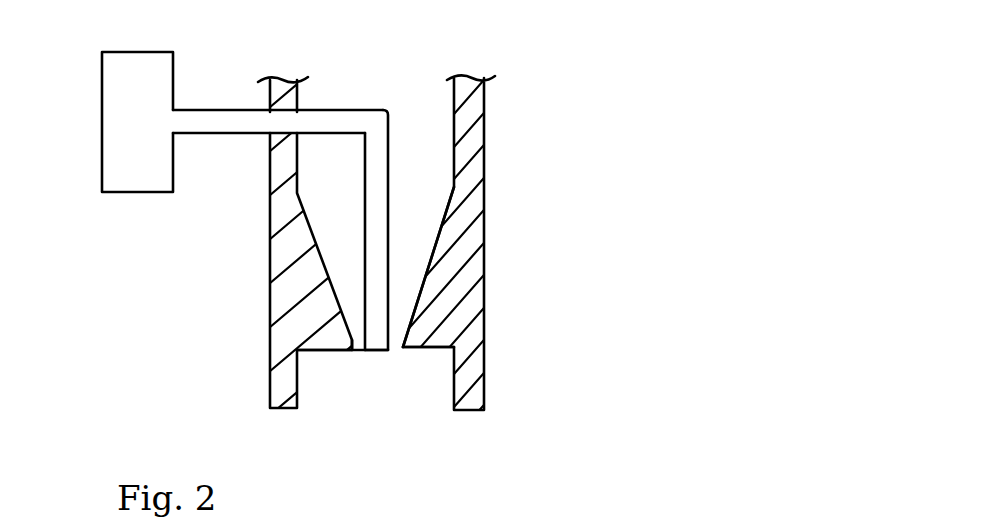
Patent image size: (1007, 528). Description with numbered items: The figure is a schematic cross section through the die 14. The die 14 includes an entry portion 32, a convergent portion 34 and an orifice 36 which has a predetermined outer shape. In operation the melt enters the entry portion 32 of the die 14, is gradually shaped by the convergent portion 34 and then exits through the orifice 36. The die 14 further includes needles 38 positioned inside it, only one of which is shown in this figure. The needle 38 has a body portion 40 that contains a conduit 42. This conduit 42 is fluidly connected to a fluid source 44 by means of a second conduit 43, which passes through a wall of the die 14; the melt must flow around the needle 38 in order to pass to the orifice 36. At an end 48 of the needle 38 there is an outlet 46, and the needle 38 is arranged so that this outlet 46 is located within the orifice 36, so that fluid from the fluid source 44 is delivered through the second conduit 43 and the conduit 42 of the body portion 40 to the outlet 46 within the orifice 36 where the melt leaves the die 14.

The die 14 is at (616, 150).
The entry portion 32 is at (298, 101).
The convergent portion 34 is at (428, 260).
The orifice 36 is at (355, 355).
The needle 38 is at (401, 294).
The body portion 40 is at (365, 250).
The conduit 42 is at (375, 220).
The second conduit 43 is at (237, 122).
The fluid source 44 is at (145, 165).
The outlet 46 is at (377, 353).
The end 48 is at (383, 350).